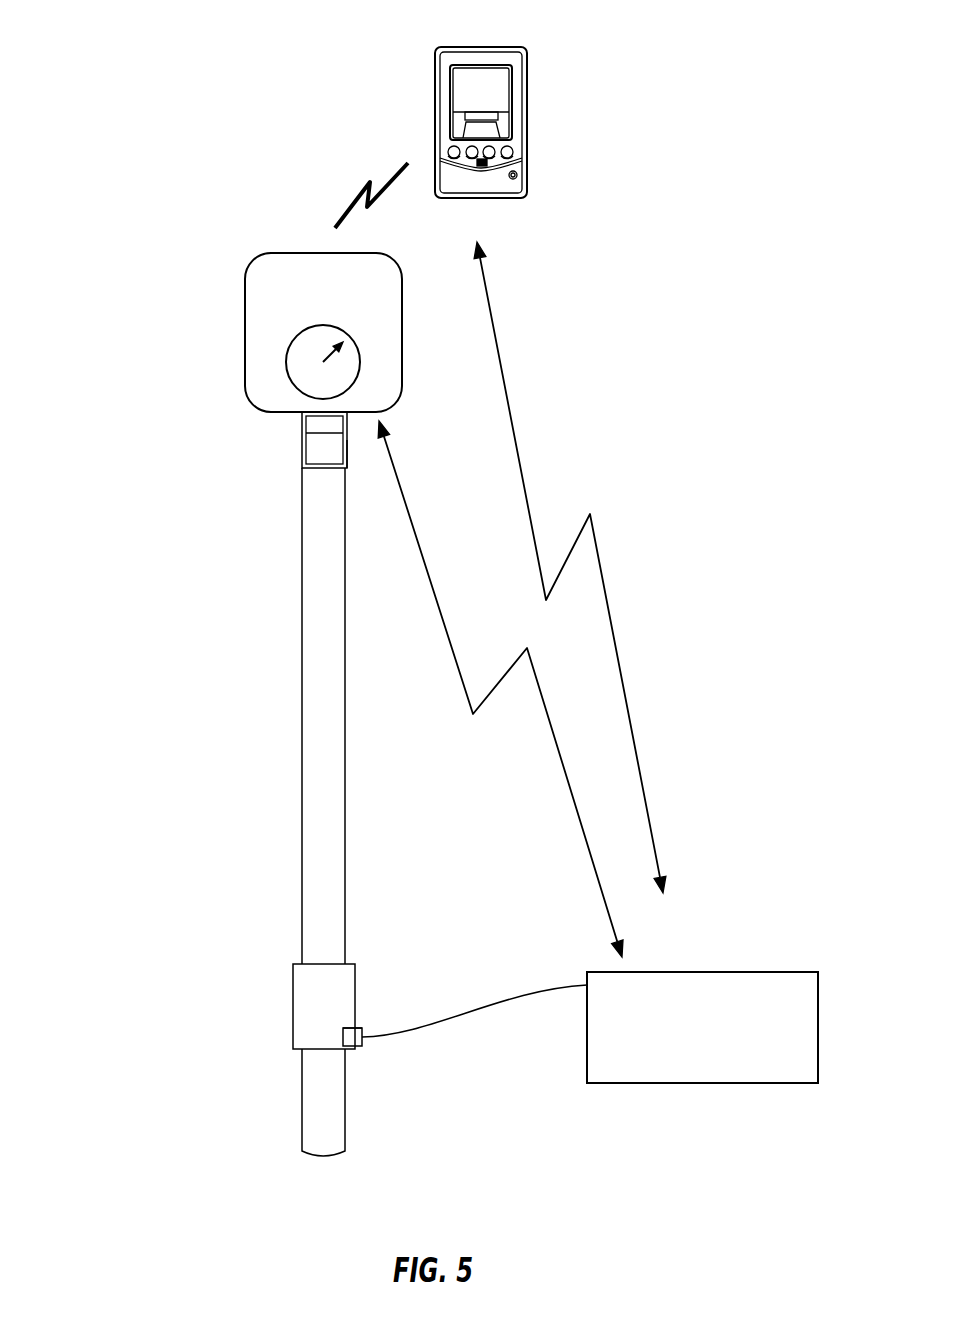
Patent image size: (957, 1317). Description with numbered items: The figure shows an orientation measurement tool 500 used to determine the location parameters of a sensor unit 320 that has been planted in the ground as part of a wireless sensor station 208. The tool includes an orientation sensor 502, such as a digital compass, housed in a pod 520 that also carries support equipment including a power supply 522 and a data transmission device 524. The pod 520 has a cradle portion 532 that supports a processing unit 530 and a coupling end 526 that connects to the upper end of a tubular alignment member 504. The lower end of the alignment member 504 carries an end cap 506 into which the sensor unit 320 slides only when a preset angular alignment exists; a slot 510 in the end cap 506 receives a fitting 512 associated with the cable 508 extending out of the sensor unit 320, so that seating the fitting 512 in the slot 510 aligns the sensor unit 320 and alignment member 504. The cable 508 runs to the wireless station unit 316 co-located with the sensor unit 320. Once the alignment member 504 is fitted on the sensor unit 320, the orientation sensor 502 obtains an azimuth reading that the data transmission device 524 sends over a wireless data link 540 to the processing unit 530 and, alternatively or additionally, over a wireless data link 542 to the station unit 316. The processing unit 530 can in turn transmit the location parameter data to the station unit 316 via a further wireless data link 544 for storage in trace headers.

The orientation measurement tool 500 is at (160, 52).
The processing unit 530 is at (518, 97).
The wireless data link 540 is at (366, 190).
The pod 520 is at (278, 307).
The cradle portion 532 is at (245, 340).
The orientation sensor 502 is at (325, 325).
The power supply 522 is at (302, 425).
The data transmission device 524 is at (302, 455).
The coupling end 526 is at (347, 460).
The alignment member 504 is at (302, 594).
The sensor unit 320 is at (302, 1125).
The end cap 506 is at (293, 993).
The slot 510 is at (347, 1048).
The fitting 512 is at (362, 1028).
The cable 508 is at (550, 985).
The wireless station unit 316 is at (726, 1051).
The wireless sensor station 208 is at (488, 1073).
The wireless data link 542 is at (426, 567).
The wireless data link 544 is at (504, 382).